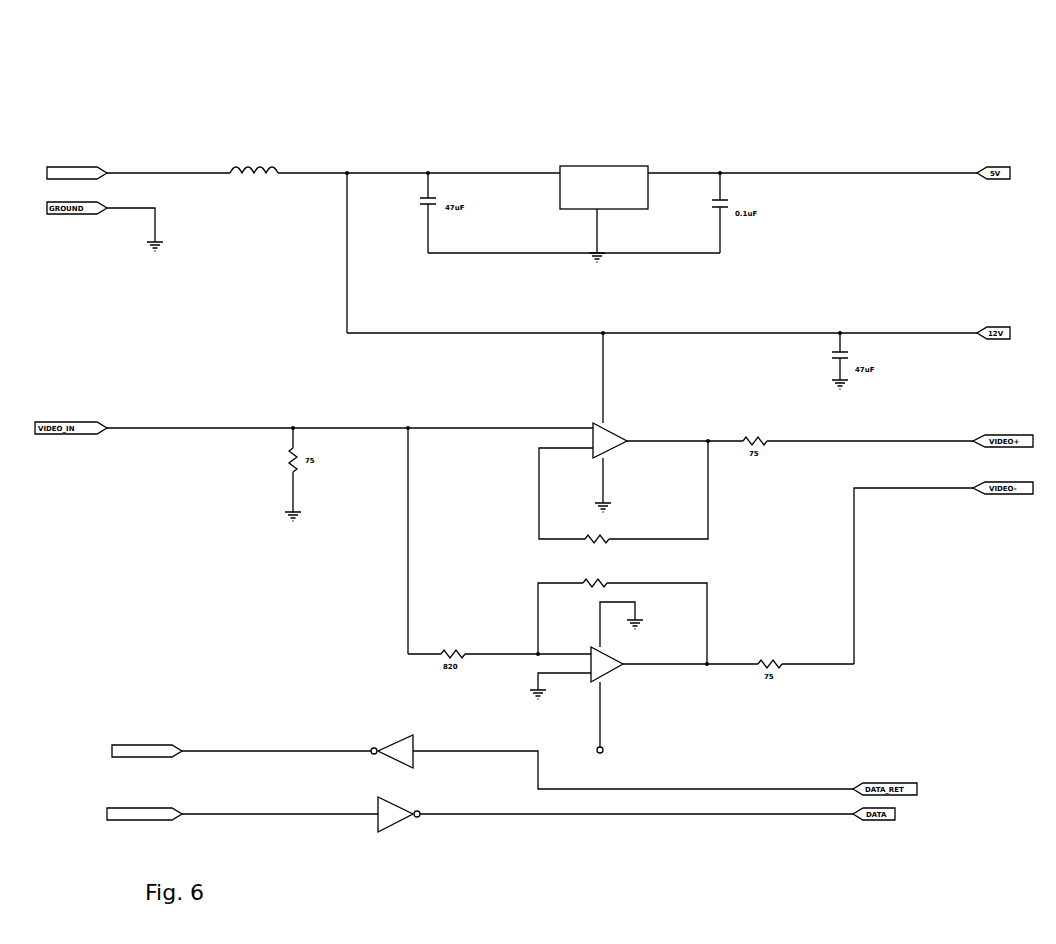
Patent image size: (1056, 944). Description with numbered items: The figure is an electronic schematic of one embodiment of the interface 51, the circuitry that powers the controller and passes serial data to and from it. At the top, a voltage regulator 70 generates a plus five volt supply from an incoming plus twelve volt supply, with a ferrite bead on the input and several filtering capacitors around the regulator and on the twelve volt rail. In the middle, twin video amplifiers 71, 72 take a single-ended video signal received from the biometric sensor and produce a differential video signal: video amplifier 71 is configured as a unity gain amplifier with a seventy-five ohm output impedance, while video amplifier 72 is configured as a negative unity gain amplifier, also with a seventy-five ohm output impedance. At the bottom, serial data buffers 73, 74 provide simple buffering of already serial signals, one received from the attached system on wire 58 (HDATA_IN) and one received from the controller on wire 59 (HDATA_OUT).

The interface 51 is at (391, 108).
The wire 58 is at (225, 750).
The wire 59 is at (228, 813).
The voltage regulator 70 is at (640, 160).
The video amplifier 71 is at (612, 424).
The video amplifier 72 is at (607, 672).
The serial data buffer 73 is at (390, 745).
The serial data buffer 74 is at (375, 835).